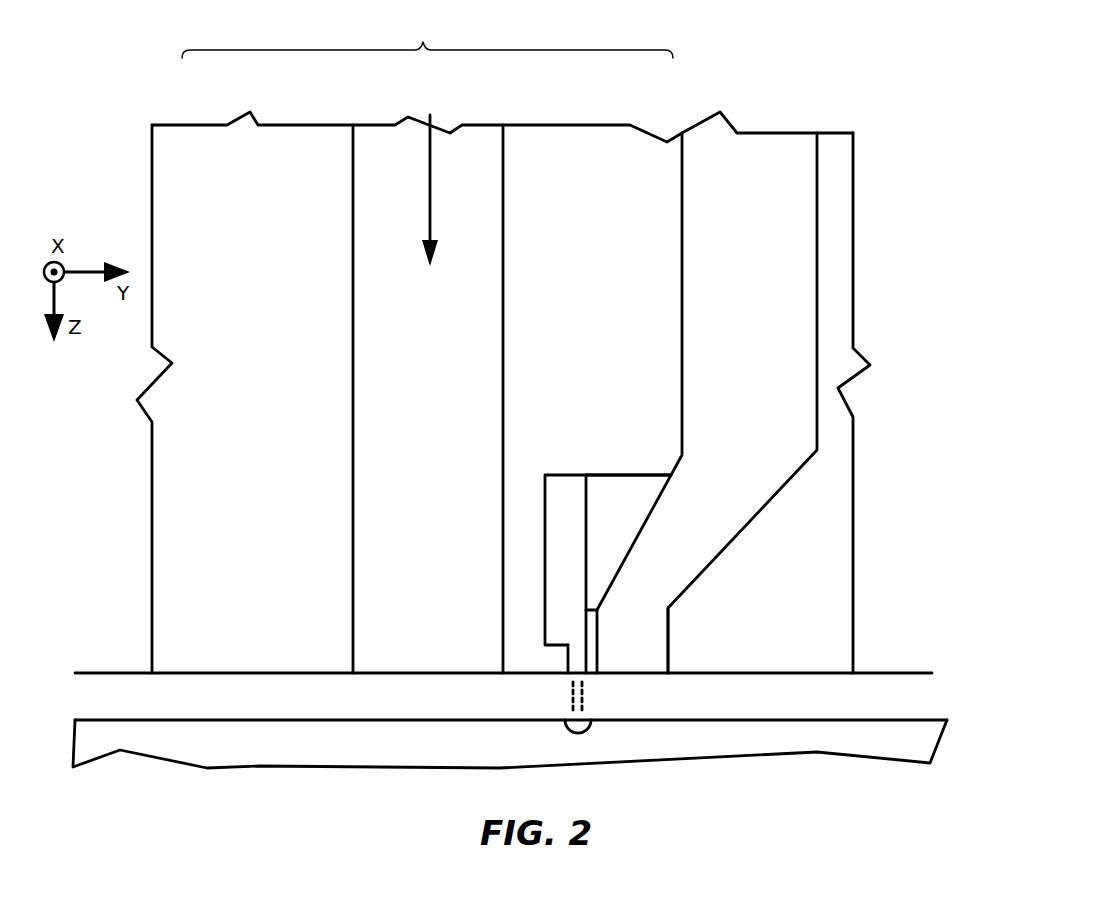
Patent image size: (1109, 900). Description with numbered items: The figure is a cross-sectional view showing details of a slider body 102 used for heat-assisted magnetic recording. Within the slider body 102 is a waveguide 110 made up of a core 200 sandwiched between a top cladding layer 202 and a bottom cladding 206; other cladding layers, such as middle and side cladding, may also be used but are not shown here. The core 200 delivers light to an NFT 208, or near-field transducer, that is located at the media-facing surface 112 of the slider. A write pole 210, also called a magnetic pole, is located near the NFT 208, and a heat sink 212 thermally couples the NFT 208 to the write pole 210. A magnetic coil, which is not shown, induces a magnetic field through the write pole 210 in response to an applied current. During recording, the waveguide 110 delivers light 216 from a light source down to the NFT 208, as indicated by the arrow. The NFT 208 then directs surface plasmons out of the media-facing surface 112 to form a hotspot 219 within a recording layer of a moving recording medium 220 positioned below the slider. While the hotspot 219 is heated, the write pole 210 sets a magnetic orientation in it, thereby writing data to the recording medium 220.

The slider body 102 is at (138, 60).
The waveguide 110 is at (427, 37).
The media-facing surface 112 is at (892, 674).
The core 200 is at (377, 135).
The top cladding layer 202 is at (617, 136).
The bottom cladding 206 is at (232, 135).
The NFT 208 is at (571, 443).
The write pole 210 is at (653, 656).
The heat sink 212 is at (623, 480).
The light 216 is at (433, 178).
The hotspot 219 is at (572, 718).
The recording medium 220 is at (262, 763).